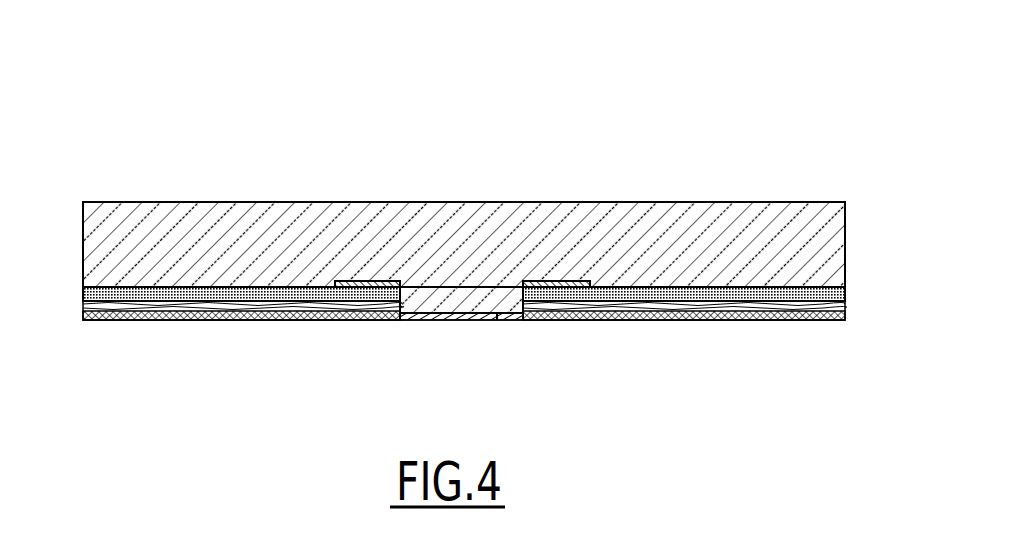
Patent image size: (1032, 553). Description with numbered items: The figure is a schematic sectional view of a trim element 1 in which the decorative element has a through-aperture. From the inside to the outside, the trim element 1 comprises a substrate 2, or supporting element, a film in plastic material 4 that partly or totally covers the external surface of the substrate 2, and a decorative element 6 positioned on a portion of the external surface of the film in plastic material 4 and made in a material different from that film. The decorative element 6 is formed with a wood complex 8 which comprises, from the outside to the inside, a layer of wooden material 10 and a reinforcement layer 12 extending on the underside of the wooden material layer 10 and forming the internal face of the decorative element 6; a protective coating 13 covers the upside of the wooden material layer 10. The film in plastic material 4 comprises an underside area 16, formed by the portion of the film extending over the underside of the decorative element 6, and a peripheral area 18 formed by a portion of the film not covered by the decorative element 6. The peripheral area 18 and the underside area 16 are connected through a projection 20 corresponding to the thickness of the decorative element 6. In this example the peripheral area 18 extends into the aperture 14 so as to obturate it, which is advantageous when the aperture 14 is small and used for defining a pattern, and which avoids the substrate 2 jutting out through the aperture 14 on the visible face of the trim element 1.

The trim element 1 is at (94, 130).
The substrate 2 is at (820, 223).
The film in plastic material 4 is at (406, 320).
The decorative element 6 is at (647, 322).
The wood complex 8 is at (851, 289).
The layer of wooden material 10 is at (757, 322).
The reinforcement layer 12 is at (823, 282).
The protective coating 13 is at (200, 322).
The aperture 14 is at (498, 320).
The underside area 16 is at (365, 283).
The peripheral area 18 is at (460, 322).
The projection 20 is at (418, 289).